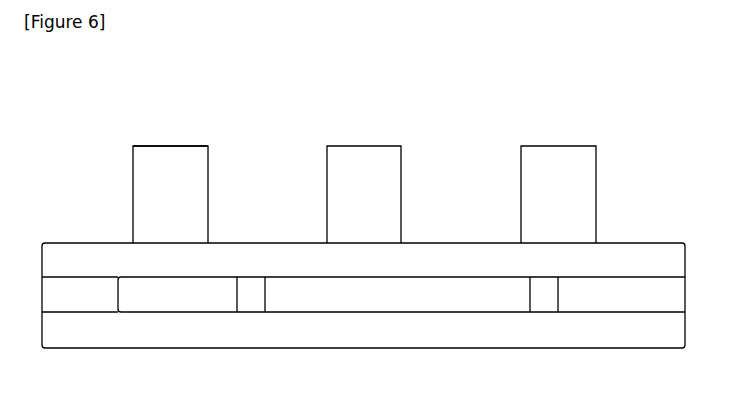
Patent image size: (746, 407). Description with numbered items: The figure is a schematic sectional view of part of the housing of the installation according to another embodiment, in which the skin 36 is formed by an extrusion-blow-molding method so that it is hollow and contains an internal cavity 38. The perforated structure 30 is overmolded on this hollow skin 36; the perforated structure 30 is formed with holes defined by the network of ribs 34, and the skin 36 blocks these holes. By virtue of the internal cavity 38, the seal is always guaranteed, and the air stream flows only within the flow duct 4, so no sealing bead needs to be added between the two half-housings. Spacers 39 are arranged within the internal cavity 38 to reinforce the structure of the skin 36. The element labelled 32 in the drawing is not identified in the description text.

The flow duct 4 is at (363, 315).
The perforated structure 30 is at (364, 194).
The gap between chips 32 is at (265, 192).
The network of ribs 34 is at (162, 146).
The skin 36 is at (212, 297).
The internal cavity 38 is at (401, 294).
The spacers 39 is at (545, 298).